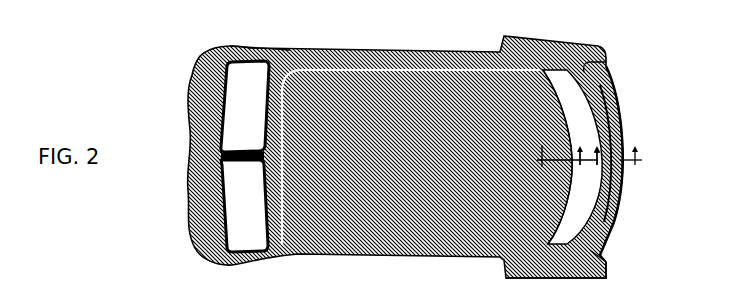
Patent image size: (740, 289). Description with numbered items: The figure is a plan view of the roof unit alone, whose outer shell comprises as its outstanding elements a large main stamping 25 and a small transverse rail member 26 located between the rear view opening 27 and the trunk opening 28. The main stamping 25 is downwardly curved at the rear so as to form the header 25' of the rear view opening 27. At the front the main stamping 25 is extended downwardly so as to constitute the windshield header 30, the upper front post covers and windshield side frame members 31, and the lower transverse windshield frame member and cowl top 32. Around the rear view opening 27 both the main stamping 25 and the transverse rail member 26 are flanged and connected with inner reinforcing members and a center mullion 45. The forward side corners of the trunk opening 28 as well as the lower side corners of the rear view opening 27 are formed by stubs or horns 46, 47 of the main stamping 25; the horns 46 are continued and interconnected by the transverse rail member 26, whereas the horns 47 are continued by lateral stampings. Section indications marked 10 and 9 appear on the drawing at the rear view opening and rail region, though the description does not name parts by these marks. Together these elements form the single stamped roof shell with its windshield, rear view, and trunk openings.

The main stamping 25 is at (405, 154).
The header 25' is at (564, 157).
The upper front post covers and windshield side frame members 31 is at (261, 56).
The lower transverse windshield frame member and cowl top 32 is at (219, 105).
The windshield header 30 is at (263, 200).
The rear view opening 27 is at (586, 212).
The transverse rail member 26 is at (614, 117).
The trunk opening 28 is at (618, 201).
The horns 46 is at (590, 248).
The horns 47 is at (601, 267).
The wall thickness dimension 10 is at (542, 145).
The center mullion 45 is at (587, 149).
The rim thickness dimension 9 is at (616, 168).